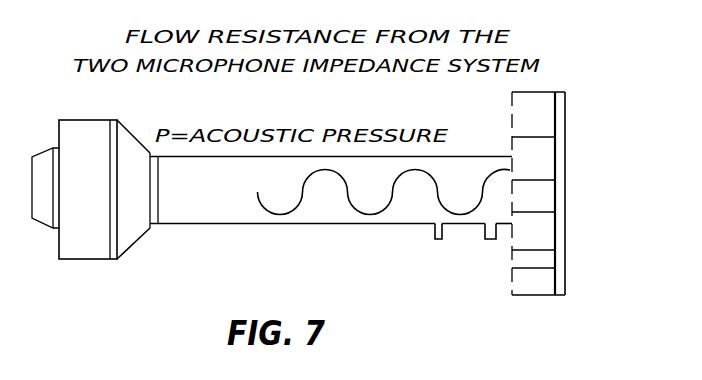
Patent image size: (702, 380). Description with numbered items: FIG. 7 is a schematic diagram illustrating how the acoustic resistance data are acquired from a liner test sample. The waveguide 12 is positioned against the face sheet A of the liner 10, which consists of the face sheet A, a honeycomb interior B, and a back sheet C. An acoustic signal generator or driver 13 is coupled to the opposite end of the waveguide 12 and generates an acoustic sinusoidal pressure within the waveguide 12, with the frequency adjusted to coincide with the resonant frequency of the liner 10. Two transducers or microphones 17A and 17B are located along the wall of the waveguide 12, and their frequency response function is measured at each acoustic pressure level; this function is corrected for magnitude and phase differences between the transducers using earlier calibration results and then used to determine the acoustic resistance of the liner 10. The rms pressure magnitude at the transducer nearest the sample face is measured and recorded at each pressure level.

The liner 10 is at (588, 193).
The waveguide 12 is at (366, 231).
The acoustic signal generator 13 is at (106, 270).
The microphone 17A is at (490, 243).
The microphone 17B is at (443, 244).
The face sheet A is at (512, 119).
The honeycomb interior B is at (545, 92).
The back sheet C is at (566, 100).